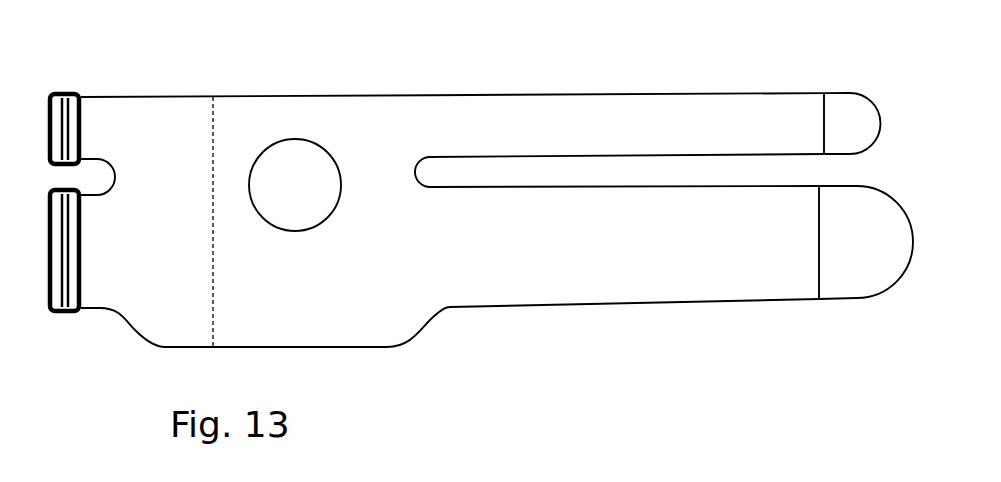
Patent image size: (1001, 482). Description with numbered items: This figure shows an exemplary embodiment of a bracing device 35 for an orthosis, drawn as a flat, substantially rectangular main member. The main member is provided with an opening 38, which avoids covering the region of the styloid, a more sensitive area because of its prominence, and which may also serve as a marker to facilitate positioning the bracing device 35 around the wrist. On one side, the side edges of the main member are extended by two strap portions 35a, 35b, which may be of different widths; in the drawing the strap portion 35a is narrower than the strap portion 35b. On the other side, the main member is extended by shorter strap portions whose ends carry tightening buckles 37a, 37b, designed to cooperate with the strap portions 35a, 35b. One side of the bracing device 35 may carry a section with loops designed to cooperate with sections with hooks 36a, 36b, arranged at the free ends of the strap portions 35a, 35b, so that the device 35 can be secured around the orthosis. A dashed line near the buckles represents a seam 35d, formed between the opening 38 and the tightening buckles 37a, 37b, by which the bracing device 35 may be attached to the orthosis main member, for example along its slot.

The bracing device 35 is at (350, 96).
The strap portion 35a is at (657, 96).
The strap portion 35b is at (671, 281).
The seam 35d is at (212, 115).
The section with hooks 36a is at (845, 115).
The section with hooks 36b is at (858, 275).
The tightening buckle 37a is at (67, 92).
The tightening buckle 37b is at (67, 318).
The opening 38 is at (282, 137).